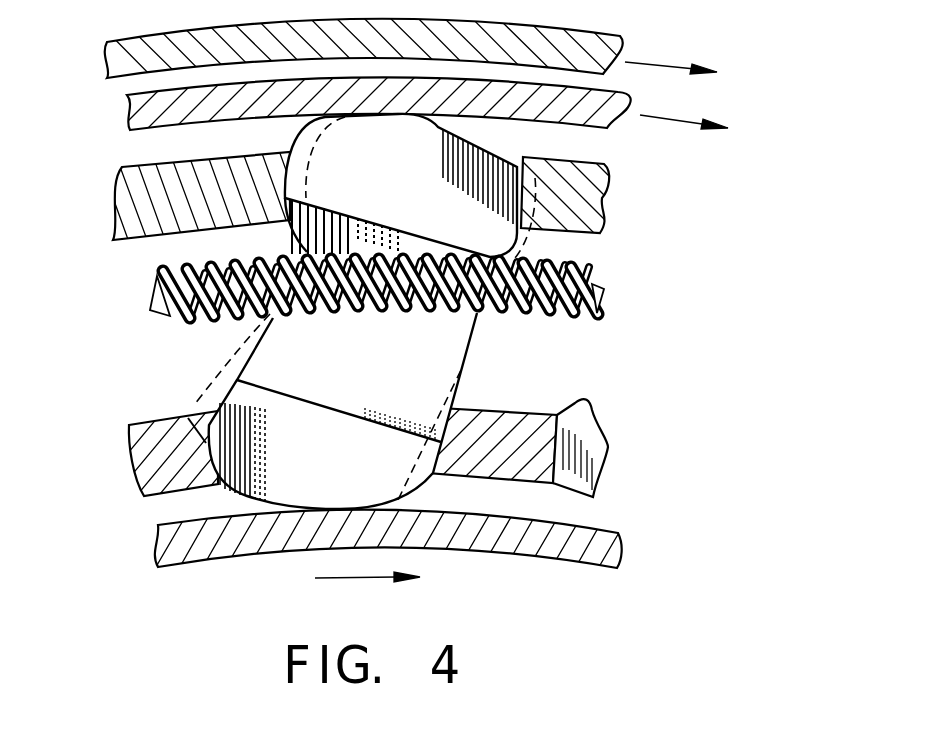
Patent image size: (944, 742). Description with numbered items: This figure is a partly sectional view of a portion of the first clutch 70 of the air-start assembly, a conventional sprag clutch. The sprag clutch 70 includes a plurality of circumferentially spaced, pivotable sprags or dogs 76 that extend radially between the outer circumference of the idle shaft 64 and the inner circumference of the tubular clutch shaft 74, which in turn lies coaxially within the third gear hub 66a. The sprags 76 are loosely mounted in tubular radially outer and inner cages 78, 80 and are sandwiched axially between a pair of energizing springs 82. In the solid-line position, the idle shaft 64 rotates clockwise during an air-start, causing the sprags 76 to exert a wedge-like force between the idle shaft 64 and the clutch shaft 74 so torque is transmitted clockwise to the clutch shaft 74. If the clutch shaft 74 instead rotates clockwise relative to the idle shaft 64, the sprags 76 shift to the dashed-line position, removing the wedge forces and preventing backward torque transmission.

The third gear hub 66a is at (623, 50).
The clutch shaft 74 is at (613, 125).
The radially outer cage 78 is at (116, 208).
The radially inner cage 80 is at (134, 462).
The sprag 76 is at (433, 352).
The energizing spring 82 is at (600, 309).
The first clutch 70 is at (677, 264).
The idle shaft 64 is at (472, 550).